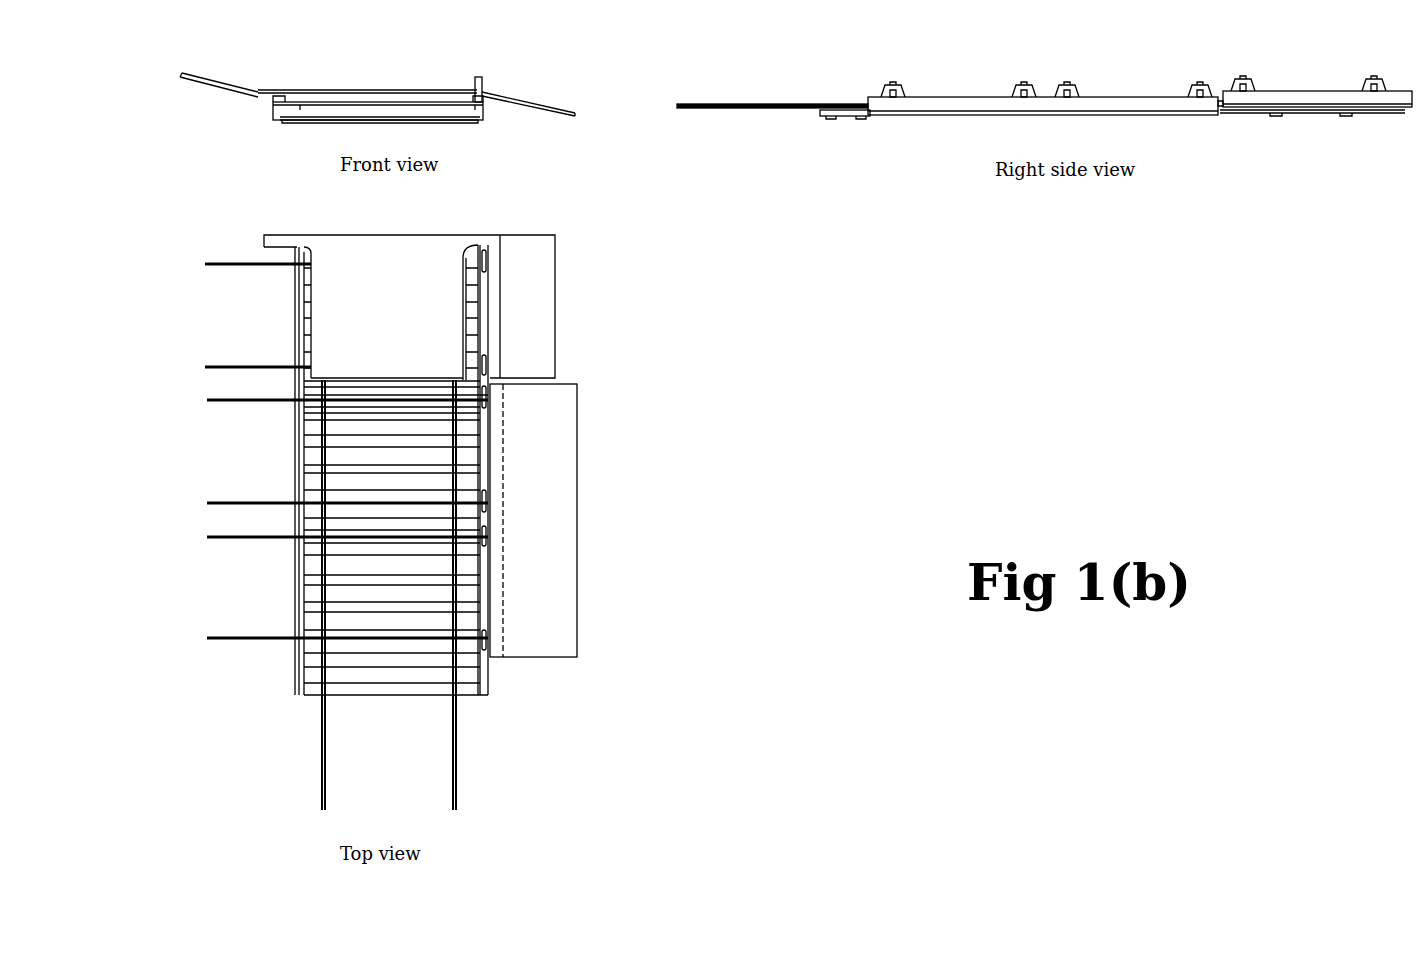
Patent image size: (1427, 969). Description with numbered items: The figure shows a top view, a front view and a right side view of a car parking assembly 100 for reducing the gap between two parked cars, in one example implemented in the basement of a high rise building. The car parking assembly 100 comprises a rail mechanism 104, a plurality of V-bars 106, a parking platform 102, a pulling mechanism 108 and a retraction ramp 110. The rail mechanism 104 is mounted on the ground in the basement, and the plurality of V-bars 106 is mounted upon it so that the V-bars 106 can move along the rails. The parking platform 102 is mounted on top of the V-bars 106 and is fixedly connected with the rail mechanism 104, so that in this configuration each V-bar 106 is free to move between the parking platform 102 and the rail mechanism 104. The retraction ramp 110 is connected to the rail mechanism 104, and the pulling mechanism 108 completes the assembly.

The car parking assembly 100 is at (872, 300).
The parking platform 102 is at (491, 232).
The rail mechanism 104 is at (295, 124).
The V-bars 106 is at (195, 70).
The pulling mechanism 108 is at (760, 102).
The retraction ramp 110 is at (921, 94).